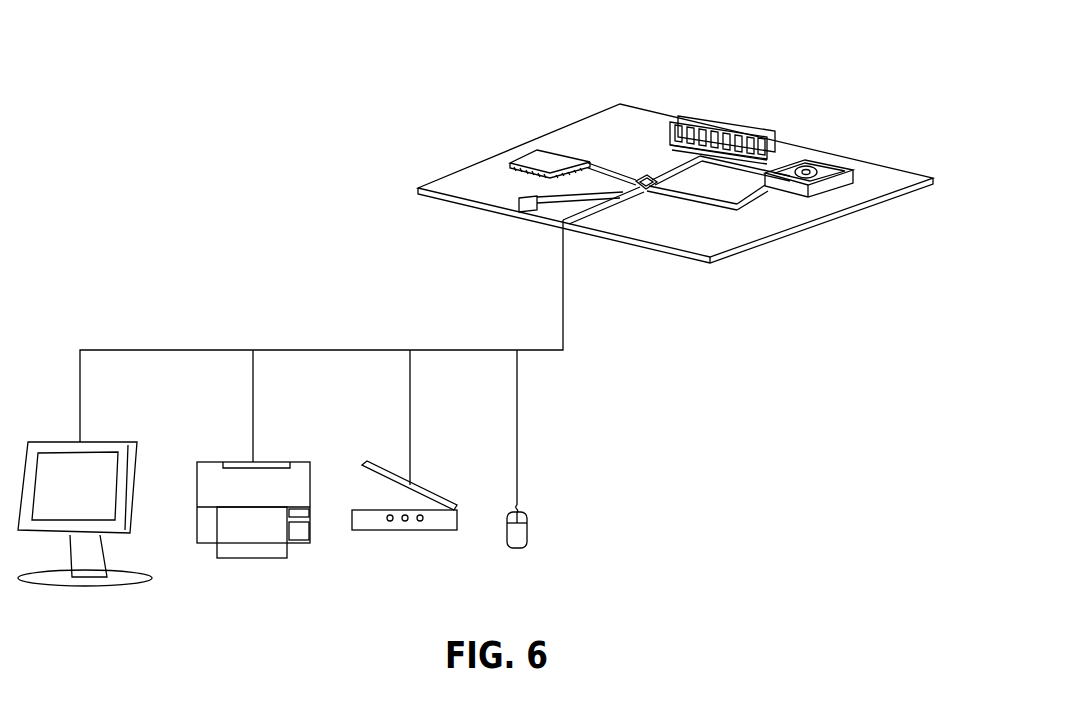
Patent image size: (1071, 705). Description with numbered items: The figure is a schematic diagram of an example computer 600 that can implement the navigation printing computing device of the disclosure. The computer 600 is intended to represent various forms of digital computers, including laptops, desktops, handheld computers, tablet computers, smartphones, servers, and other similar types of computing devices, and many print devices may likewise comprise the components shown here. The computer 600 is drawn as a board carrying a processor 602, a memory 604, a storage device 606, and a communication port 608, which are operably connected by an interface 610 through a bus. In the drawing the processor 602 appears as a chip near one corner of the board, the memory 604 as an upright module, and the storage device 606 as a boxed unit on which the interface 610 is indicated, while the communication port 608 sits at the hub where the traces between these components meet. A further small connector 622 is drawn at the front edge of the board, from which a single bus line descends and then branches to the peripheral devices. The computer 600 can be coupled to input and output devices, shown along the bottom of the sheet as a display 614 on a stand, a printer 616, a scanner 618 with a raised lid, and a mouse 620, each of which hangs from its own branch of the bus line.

The computer 600 is at (797, 57).
The processor 602 is at (537, 160).
The memory 604 is at (711, 118).
The storage device 606 is at (846, 203).
The communication port 608 is at (650, 190).
The interface 610 is at (806, 191).
The display 614 is at (110, 588).
The printer 616 is at (252, 560).
The scanner 618 is at (435, 532).
The mouse 620 is at (529, 528).
The I/O connector 622 is at (523, 203).